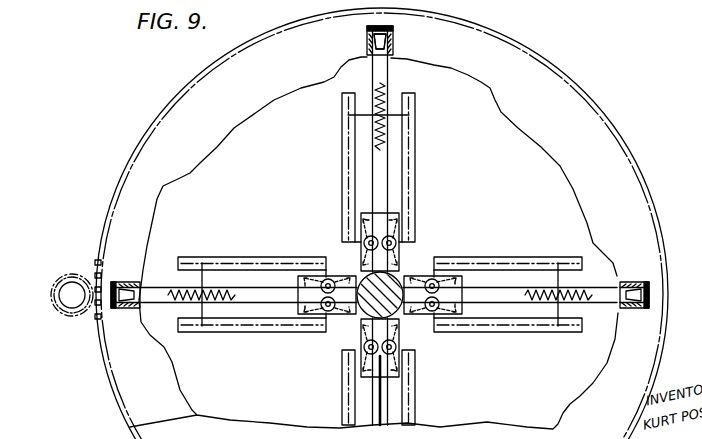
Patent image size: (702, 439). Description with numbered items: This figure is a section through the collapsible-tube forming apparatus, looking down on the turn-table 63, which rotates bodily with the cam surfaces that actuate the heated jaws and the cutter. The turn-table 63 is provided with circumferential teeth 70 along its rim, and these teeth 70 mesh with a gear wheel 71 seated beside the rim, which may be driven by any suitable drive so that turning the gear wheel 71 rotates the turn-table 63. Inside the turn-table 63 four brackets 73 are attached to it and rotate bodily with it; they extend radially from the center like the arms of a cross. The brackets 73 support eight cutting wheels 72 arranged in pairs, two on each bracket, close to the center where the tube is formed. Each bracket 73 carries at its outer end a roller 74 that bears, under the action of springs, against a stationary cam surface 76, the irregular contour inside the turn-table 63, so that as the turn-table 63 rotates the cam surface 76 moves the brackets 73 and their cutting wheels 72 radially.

The turn-table 63 is at (538, 77).
The stationary cam surface 76 is at (523, 138).
The cutting wheels 72 is at (293, 322).
The brackets 73 is at (391, 46).
The roller 74 is at (372, 45).
The circumferential teeth 70 is at (97, 315).
The gear wheel 71 is at (72, 295).